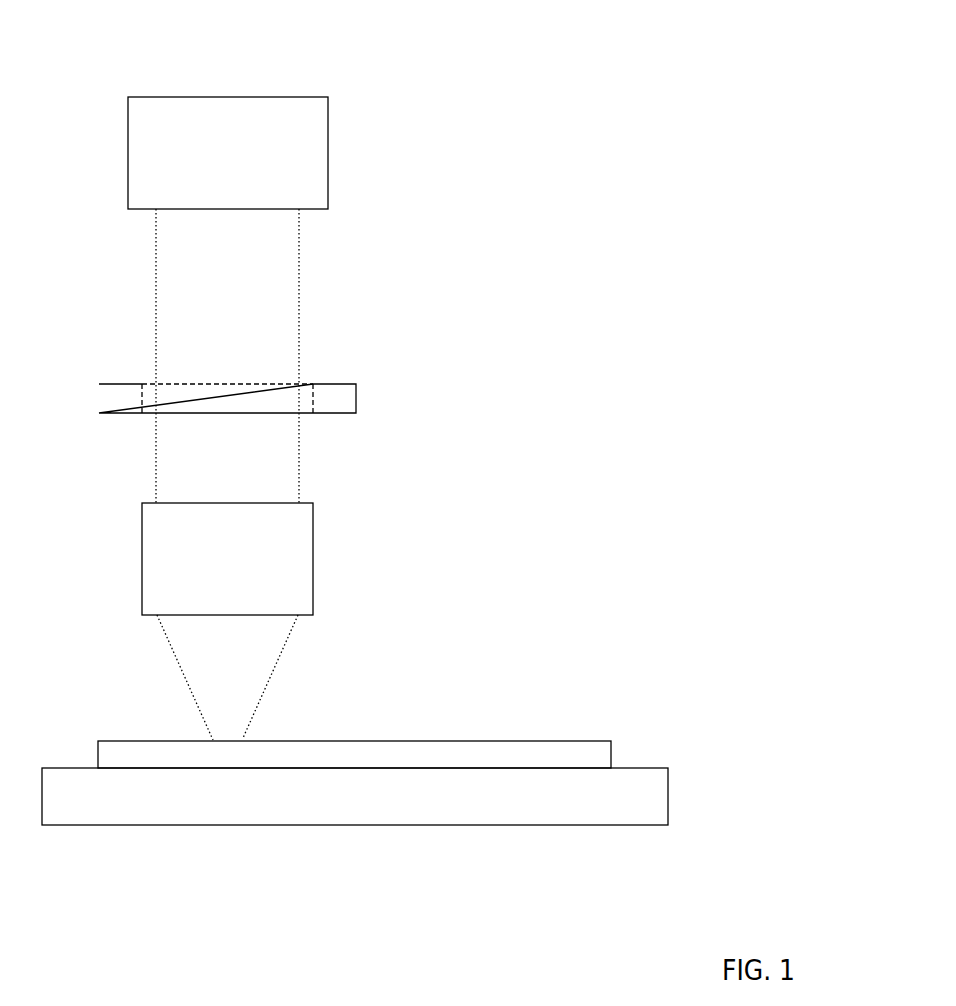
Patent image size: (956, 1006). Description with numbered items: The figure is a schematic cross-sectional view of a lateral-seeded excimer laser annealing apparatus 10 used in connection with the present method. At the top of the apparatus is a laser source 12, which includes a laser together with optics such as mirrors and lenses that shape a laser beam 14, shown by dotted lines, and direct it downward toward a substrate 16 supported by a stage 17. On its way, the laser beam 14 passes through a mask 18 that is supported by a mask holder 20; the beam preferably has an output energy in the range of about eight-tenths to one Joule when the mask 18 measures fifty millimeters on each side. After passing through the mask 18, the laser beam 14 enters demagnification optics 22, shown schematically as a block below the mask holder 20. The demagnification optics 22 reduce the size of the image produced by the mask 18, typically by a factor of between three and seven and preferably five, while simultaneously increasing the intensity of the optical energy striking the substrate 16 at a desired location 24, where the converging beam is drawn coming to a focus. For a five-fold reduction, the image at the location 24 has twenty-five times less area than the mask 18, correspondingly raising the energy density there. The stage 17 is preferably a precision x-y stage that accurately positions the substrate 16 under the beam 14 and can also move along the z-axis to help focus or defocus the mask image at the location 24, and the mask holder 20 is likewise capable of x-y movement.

The lateral-seeded excimer laser annealing apparatus 10 is at (479, 108).
The laser source 12 is at (307, 191).
The laser beam 14 is at (293, 305).
The substrate 16 is at (602, 755).
The stage 17 is at (658, 797).
The mask 18 is at (200, 384).
The mask holder 20 is at (352, 395).
The demagnification optics 22 is at (303, 560).
The desired location 24 is at (218, 743).